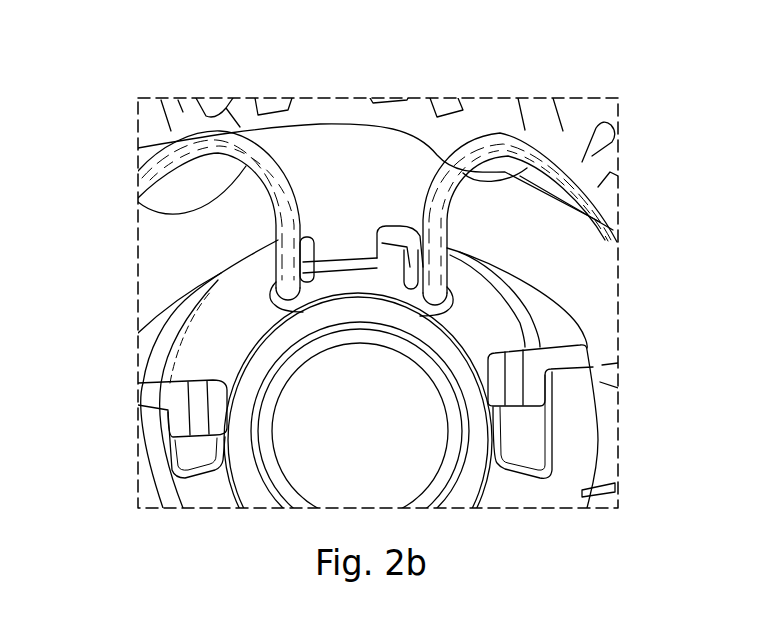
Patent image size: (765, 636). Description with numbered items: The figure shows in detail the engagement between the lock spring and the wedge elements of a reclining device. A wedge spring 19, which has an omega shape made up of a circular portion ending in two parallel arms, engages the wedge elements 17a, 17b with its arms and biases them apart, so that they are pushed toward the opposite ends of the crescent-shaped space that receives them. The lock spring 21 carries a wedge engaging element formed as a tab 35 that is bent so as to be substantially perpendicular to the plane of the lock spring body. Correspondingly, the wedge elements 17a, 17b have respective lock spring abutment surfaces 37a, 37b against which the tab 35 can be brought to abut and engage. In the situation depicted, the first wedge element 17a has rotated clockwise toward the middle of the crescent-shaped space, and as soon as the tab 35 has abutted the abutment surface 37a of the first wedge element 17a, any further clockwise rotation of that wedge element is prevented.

The wedge spring 19 is at (190, 146).
The lock spring 21 is at (377, 123).
The tab 35 is at (340, 267).
The lock spring abutment surface 37a is at (276, 272).
The lock spring abutment surface 37b is at (445, 277).
The first wedge element 17a is at (202, 347).
The second wedge element 17b is at (518, 320).